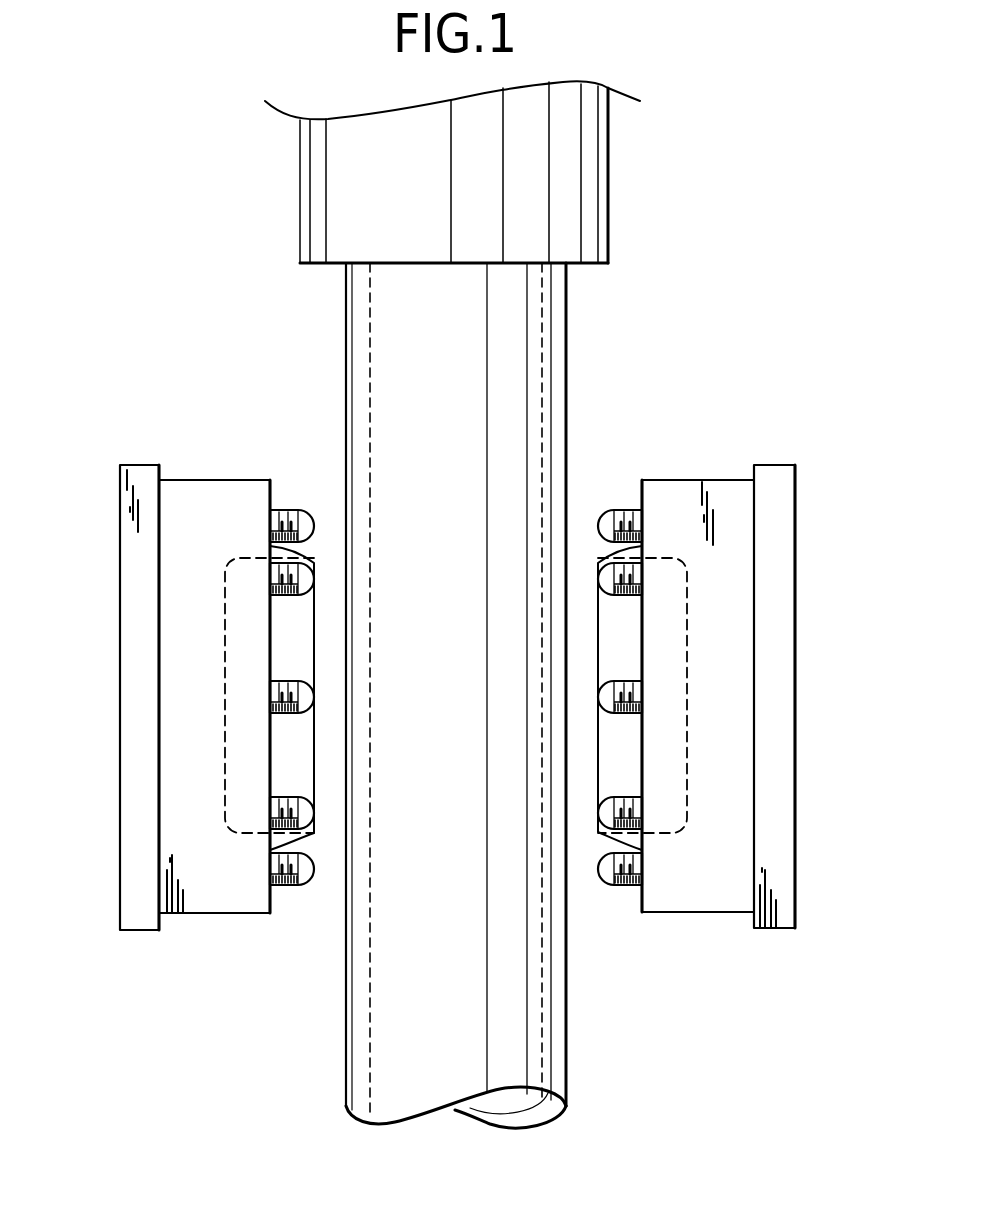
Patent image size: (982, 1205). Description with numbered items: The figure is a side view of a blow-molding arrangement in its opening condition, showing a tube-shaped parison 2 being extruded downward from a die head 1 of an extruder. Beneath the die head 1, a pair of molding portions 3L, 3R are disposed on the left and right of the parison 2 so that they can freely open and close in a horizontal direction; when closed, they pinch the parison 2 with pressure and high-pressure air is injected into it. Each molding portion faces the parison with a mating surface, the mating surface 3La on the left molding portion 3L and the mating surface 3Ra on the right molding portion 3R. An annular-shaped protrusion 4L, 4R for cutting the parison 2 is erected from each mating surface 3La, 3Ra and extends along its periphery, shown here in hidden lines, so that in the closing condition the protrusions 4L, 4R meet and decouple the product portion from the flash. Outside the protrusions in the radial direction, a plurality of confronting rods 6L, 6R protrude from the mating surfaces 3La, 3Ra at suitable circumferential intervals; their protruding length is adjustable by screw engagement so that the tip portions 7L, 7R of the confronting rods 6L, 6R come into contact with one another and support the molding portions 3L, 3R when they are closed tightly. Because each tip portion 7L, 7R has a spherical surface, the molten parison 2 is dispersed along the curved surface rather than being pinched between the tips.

The die head 1 is at (582, 150).
The parison 2 is at (517, 307).
The molding portion 3L is at (175, 503).
The mating surface 3La is at (268, 478).
The molding portion 3R is at (733, 500).
The mating surface 3Ra is at (635, 477).
The annular-shaped protrusion 4L is at (287, 753).
The annular-shaped protrusion 4R is at (620, 755).
The confronting rods 6L is at (283, 507).
The confronting rods 6R is at (625, 507).
The tip portion 7L is at (300, 507).
The tip portion 7R is at (598, 507).